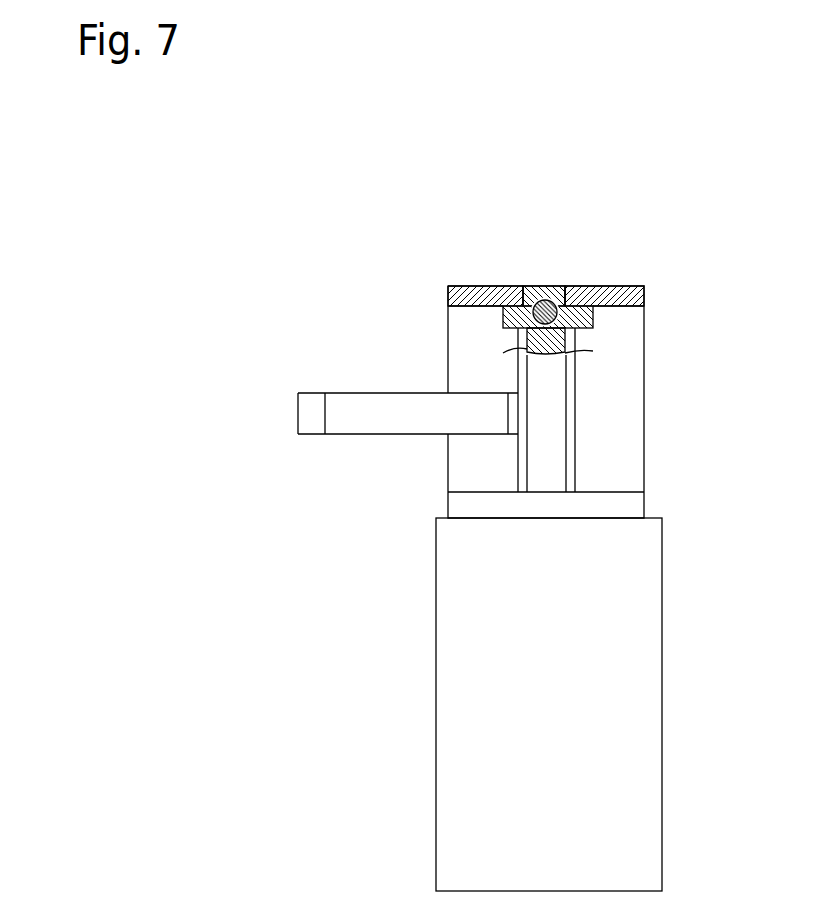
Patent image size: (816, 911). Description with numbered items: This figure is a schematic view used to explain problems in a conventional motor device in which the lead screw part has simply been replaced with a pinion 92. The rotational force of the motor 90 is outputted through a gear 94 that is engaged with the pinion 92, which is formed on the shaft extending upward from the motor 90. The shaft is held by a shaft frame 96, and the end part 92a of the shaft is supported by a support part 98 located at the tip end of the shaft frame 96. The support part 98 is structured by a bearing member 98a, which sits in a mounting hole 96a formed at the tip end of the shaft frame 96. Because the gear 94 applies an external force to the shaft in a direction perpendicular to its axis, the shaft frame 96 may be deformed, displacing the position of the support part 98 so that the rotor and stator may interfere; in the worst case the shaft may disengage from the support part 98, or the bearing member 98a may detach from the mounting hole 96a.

The motor 90 is at (273, 196).
The pinion 92 is at (578, 384).
The end part of the shaft 92a is at (585, 335).
The gear 94 is at (340, 393).
The shaft frame 96 is at (460, 322).
The mounting hole 96a is at (562, 283).
The support part 98 is at (603, 265).
The bearing member 98a is at (557, 277).